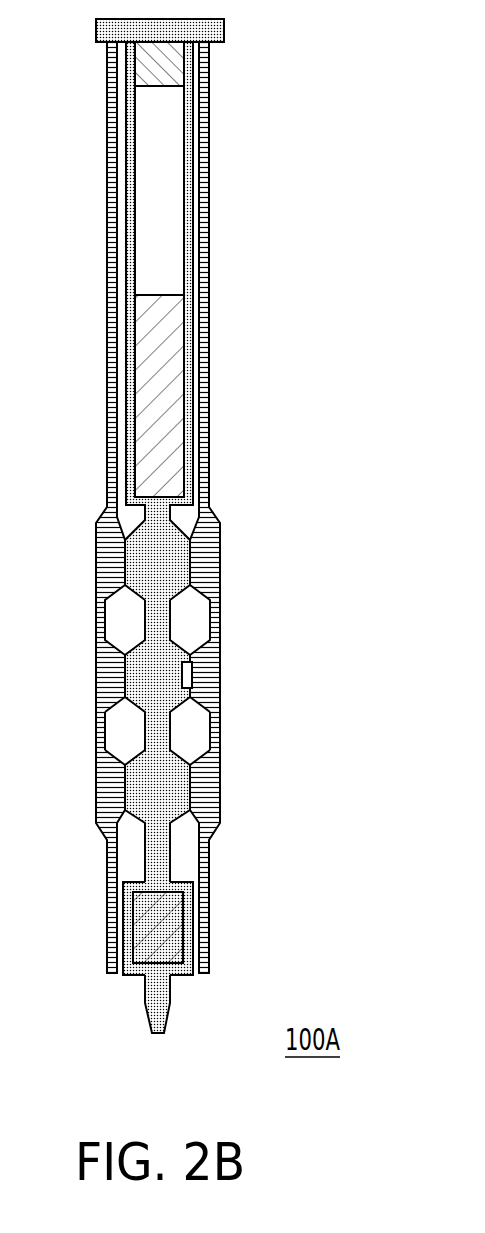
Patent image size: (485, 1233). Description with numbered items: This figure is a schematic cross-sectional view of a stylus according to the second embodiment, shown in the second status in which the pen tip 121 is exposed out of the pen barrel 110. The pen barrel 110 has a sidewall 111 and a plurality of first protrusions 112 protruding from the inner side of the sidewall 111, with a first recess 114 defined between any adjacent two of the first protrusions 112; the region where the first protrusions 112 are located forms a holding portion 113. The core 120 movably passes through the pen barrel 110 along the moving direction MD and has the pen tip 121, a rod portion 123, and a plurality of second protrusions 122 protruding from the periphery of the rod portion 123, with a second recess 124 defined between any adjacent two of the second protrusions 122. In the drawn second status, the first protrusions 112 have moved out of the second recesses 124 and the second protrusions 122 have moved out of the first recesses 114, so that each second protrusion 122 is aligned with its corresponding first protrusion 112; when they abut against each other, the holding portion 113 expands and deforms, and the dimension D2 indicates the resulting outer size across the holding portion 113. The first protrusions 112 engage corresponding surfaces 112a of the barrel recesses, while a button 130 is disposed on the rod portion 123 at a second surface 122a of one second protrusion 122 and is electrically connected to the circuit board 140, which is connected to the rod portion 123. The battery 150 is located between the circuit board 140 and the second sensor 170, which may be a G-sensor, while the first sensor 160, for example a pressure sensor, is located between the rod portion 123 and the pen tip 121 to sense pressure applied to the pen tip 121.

The pen barrel 110 is at (95, 118).
The sidewall 111 is at (115, 193).
The first protrusion 112 is at (113, 688).
The positioning recess 112a is at (186, 652).
The holding portion 113 is at (222, 548).
The first recess 114 is at (117, 743).
The core 120 is at (208, 175).
The pen tip 121 is at (157, 992).
The second protrusion 122 is at (123, 672).
The second surface 122a is at (196, 692).
The rod portion 123 is at (183, 520).
The second recess 124 is at (135, 723).
The button 130 is at (193, 672).
The circuit board 140 is at (172, 397).
The battery 150 is at (175, 243).
The first sensor 160 is at (172, 936).
The second sensor 170 is at (172, 66).
The width dimension D2 is at (78, 562).
The moving direction MD is at (80, 302).